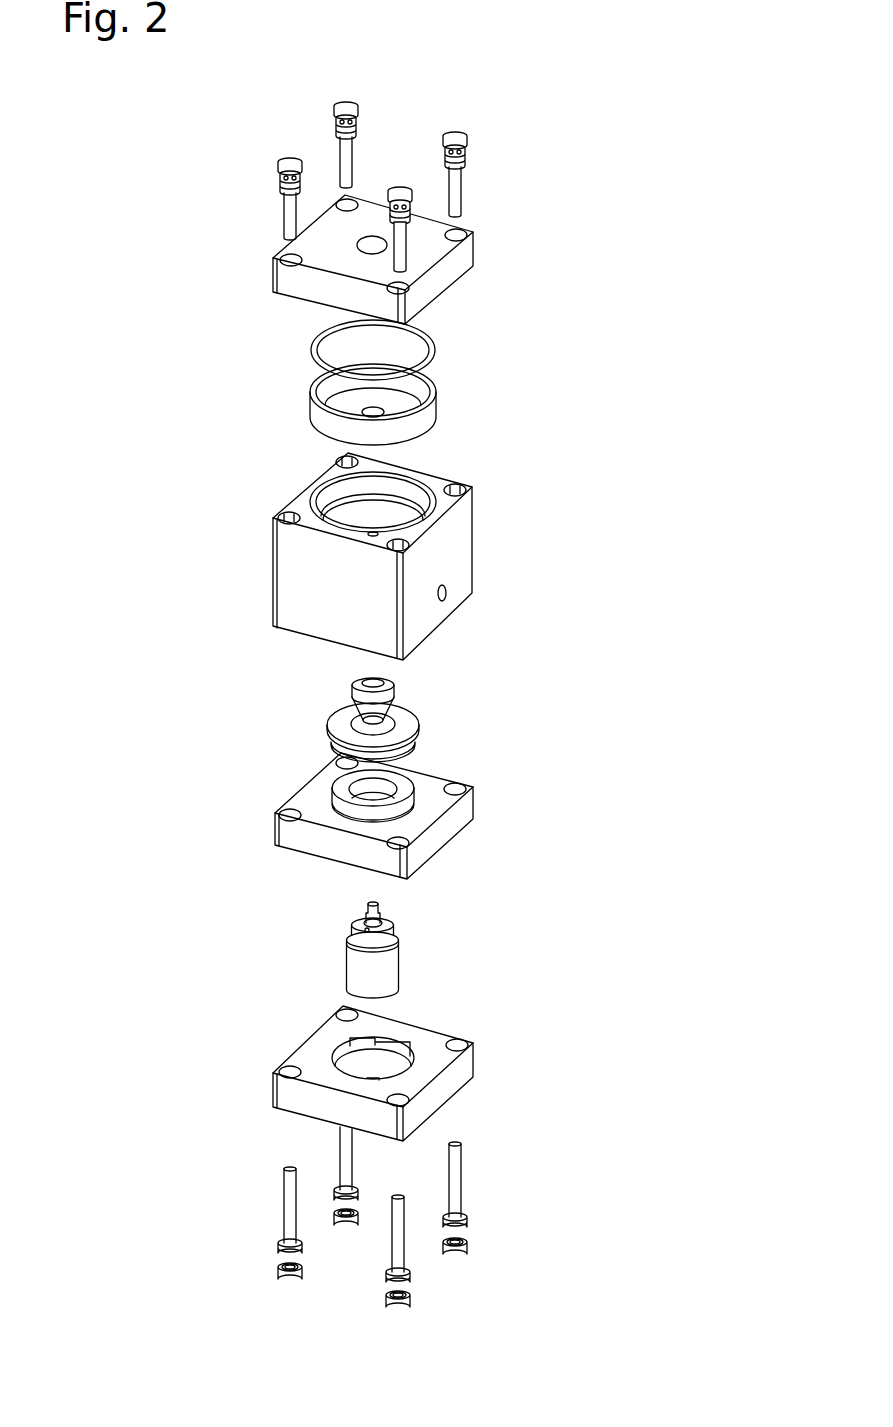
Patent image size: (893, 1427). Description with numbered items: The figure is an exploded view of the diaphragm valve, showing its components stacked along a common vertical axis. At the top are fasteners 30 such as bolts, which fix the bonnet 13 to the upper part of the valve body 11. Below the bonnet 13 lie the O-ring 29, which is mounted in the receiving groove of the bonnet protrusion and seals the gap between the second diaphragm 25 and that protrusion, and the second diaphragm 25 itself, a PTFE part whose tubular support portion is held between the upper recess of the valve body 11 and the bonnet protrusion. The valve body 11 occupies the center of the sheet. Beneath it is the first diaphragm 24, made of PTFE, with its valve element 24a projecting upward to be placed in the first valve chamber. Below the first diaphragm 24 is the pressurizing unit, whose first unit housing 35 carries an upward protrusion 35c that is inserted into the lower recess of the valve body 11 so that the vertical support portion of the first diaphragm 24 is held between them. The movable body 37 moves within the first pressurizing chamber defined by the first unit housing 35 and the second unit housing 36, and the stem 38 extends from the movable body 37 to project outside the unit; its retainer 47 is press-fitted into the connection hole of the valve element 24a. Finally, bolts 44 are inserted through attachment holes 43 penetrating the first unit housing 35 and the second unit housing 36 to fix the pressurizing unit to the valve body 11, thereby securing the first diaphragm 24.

The fasteners 30 is at (463, 187).
The bonnet 13 is at (463, 253).
The O-ring 29 is at (433, 348).
The second diaphragm 25 is at (432, 412).
The valve body 11 is at (458, 547).
The valve element 24a is at (353, 703).
The first diaphragm 24 is at (407, 720).
The protrusion 35c is at (413, 802).
The first unit housing 35 is at (465, 808).
The attachment holes 43 is at (287, 815).
The retainer 47 is at (377, 907).
The stem 38 is at (390, 920).
The movable body 37 is at (393, 965).
The second unit housing 36 is at (463, 1063).
The bolts 44 is at (287, 1210).